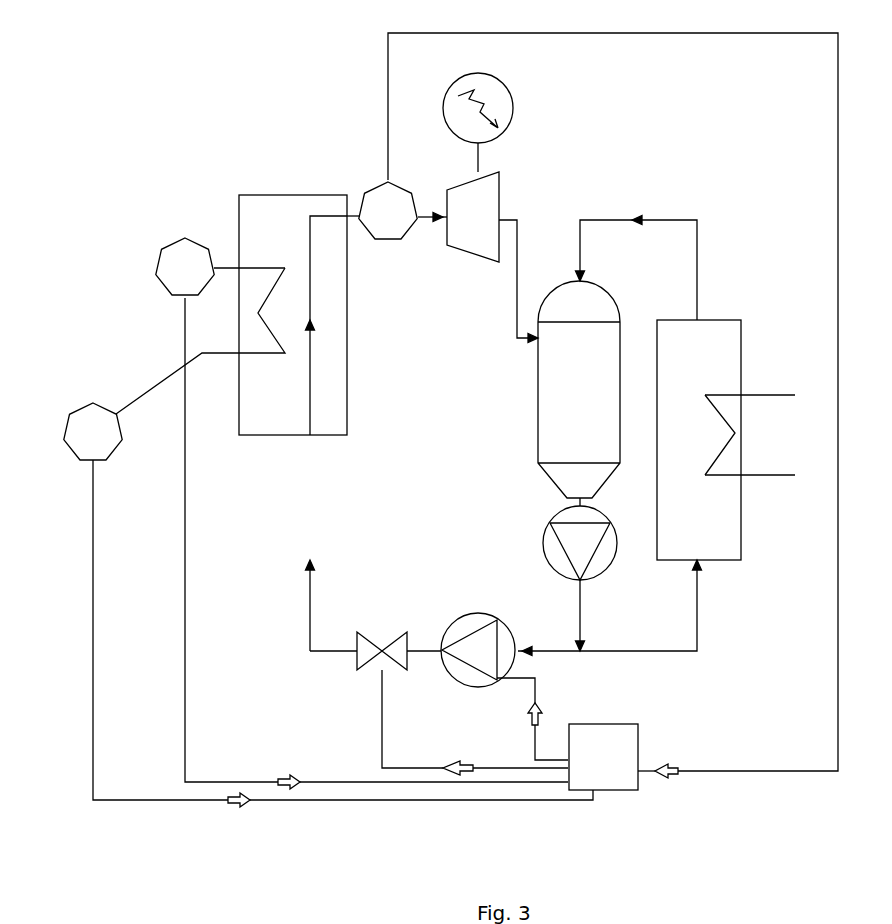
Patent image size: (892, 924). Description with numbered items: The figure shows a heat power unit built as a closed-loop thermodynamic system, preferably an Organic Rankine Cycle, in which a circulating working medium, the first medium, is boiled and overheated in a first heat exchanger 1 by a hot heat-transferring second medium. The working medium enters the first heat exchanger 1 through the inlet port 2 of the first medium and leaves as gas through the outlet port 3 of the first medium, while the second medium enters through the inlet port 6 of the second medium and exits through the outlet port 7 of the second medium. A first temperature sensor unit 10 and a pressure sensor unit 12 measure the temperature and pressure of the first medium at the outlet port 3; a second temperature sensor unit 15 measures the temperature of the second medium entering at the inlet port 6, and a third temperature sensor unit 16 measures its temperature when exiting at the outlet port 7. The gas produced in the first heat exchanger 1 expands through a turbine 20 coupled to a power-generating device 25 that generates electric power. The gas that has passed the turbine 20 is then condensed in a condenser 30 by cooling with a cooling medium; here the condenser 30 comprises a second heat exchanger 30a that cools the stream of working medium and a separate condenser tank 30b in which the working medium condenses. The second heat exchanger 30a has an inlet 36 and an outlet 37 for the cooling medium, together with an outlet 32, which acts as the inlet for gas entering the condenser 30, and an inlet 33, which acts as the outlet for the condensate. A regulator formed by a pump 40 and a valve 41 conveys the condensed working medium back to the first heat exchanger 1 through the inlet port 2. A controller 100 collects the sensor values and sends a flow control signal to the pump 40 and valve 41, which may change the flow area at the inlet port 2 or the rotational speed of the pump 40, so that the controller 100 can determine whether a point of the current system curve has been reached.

The first heat exchanger 1 is at (280, 443).
The inlet port of the first medium 2 is at (317, 443).
The outlet port of the first medium 3 is at (357, 206).
The inlet port of the second medium 6 is at (228, 260).
The outlet port of the second medium 7 is at (225, 367).
The first temperature sensor unit 10 is at (416, 256).
The pressure sensor unit 12 is at (397, 248).
The second temperature sensor unit 15 is at (167, 305).
The third temperature sensor unit 16 is at (65, 458).
The turbine 20 is at (513, 187).
The power-generating device 25 is at (528, 95).
The condenser 30 is at (733, 300).
The second heat exchanger 30a is at (728, 362).
The condenser tank 30b is at (532, 428).
The outlet for the working medium 32 is at (682, 308).
The inlet for the working medium 33 is at (705, 568).
The inlet for the cooling medium 36 is at (793, 382).
The outlet for the cooling medium 37 is at (787, 490).
The pump 40 is at (462, 603).
The valve 41 is at (348, 672).
The controller 100 is at (628, 813).